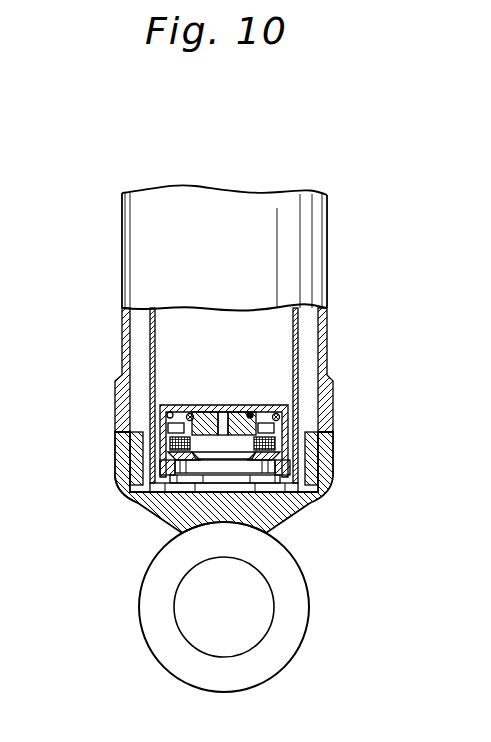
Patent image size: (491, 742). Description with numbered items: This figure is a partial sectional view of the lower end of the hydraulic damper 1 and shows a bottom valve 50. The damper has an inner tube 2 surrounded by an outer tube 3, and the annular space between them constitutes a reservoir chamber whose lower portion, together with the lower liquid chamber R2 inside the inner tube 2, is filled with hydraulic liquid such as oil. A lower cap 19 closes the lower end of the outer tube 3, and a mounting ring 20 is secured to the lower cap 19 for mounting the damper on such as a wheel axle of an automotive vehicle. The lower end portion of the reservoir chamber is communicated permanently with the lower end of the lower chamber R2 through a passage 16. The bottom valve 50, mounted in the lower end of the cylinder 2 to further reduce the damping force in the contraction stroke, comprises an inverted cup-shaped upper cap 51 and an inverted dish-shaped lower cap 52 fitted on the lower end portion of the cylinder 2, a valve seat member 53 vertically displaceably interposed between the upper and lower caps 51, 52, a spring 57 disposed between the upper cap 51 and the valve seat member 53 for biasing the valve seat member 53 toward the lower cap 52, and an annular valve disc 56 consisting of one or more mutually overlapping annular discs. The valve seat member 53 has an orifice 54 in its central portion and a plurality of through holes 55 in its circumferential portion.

The hydraulic damper 1 is at (118, 230).
The inner tube 2 is at (149, 316).
The outer tube 3 is at (123, 343).
The passage 16 is at (322, 491).
The lower cap 19 is at (135, 494).
The mounting ring 20 is at (300, 614).
The bottom valve 50 is at (223, 405).
The upper cap 51 is at (185, 404).
The lower cap 52 is at (162, 493).
The valve seat member 53 is at (240, 415).
The orifice 54 is at (223, 412).
The through holes 55 is at (165, 428).
The annular valve disc 56 is at (285, 456).
The spring 57 is at (162, 410).
The lower liquid chamber R2 is at (223, 322).